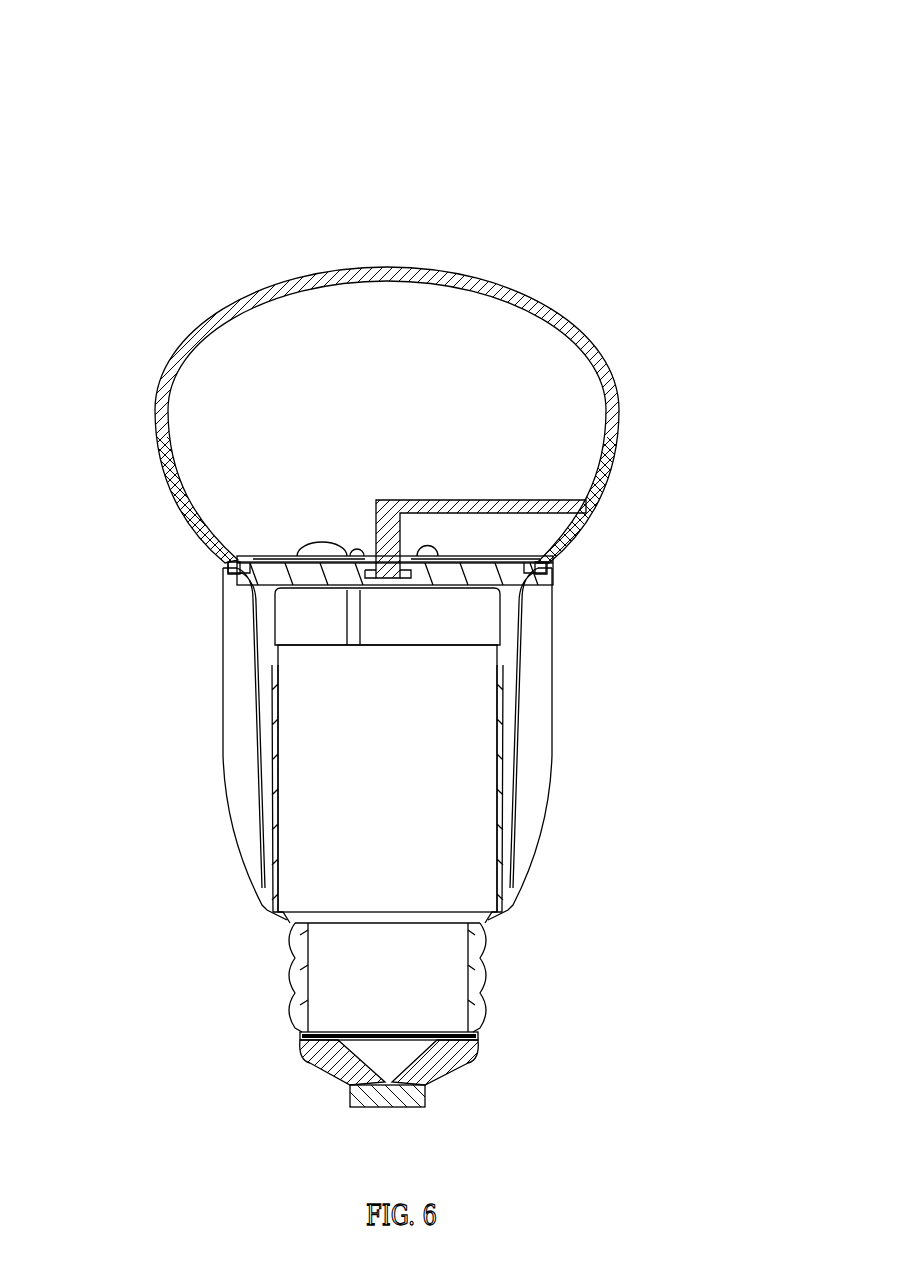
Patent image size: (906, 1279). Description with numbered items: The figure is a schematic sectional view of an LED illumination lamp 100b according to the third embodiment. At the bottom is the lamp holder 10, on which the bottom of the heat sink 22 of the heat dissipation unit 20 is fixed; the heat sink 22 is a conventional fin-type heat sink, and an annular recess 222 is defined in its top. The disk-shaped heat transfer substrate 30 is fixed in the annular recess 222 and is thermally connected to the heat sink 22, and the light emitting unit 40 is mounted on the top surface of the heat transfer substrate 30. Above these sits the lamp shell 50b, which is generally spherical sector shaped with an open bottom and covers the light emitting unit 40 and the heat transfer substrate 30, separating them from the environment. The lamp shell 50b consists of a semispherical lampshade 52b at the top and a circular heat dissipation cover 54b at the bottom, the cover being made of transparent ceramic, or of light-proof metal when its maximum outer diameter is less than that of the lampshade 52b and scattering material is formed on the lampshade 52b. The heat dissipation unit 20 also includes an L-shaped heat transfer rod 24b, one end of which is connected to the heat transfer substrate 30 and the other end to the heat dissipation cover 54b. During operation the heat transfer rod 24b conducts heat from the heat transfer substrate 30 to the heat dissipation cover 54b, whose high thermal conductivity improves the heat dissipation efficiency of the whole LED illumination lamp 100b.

The LED illumination lamp 100b is at (405, 43).
The lamp shell 50b is at (346, 375).
The lampshade 52b is at (483, 271).
The heat dissipation cover 54b is at (592, 517).
The heat transfer rod 24b is at (417, 503).
The heat transfer substrate 30 is at (273, 665).
The annular recess 222 is at (224, 562).
The heat sink 22 is at (537, 604).
The light emitting unit 40 is at (300, 557).
The heat dissipation unit 20 is at (387, 653).
The lamp holder 10 is at (295, 982).